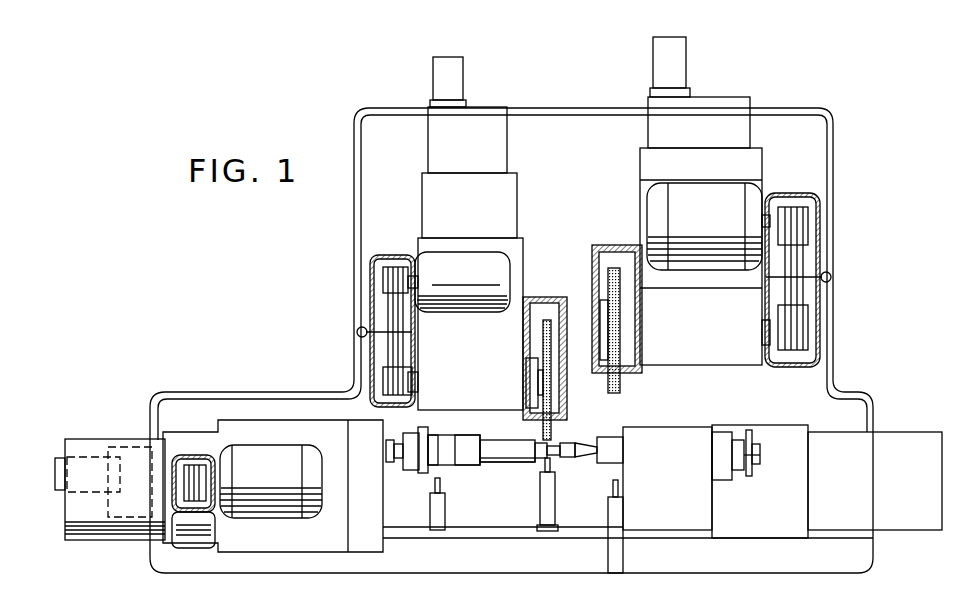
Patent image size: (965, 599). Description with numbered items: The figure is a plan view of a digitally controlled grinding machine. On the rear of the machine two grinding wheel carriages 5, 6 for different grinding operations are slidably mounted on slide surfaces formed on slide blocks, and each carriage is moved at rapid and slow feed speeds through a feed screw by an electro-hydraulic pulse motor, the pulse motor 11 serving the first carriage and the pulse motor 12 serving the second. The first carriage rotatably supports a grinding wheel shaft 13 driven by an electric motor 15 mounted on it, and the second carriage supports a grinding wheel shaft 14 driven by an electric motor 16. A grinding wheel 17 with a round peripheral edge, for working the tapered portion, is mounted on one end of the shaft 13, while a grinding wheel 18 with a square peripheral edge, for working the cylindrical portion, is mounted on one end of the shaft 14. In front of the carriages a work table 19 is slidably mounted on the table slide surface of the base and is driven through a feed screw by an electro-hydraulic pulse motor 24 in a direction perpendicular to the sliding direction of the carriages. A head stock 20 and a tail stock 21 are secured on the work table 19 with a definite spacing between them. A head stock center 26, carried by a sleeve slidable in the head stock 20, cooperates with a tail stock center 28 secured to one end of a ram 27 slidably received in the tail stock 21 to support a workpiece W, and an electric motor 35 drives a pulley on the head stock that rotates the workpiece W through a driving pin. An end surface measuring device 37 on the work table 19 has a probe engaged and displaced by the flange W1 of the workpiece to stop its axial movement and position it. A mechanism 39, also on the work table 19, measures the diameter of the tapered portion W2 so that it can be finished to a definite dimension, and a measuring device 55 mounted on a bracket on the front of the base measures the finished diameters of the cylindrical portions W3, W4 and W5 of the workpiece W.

The grinding wheel carriage 5 is at (462, 355).
The grinding wheel carriage 6 is at (731, 350).
The electro-hydraulic pulse motor 11 is at (452, 62).
The electro-hydraulic pulse motor 12 is at (677, 47).
The grinding wheel shaft 13 is at (525, 375).
The grinding wheel shaft 14 is at (636, 328).
The electric motor 15 is at (458, 262).
The electric motor 16 is at (650, 200).
The grinding wheel 17 is at (546, 318).
The grinding wheel 18 is at (620, 388).
The work table 19 is at (490, 530).
The head stock 20 is at (253, 402).
The tail stock 21 is at (672, 440).
The electro-hydraulic pulse motor 24 is at (58, 475).
The head stock center 26 is at (398, 465).
The ram 27 is at (612, 440).
The tail stock center 28 is at (572, 441).
The electric motor 35 is at (278, 510).
The end surface measuring device 37 is at (437, 532).
The mechanism for finishing the tapered portion 39 is at (552, 533).
The measuring device 55 is at (623, 556).
The workpiece W is at (488, 443).
The flange W1 is at (428, 436).
The tapered portion W2 is at (560, 458).
The cylindrical portion W3 is at (446, 465).
The cylindrical portion W4 is at (468, 438).
The cylindrical portion W5 is at (494, 463).